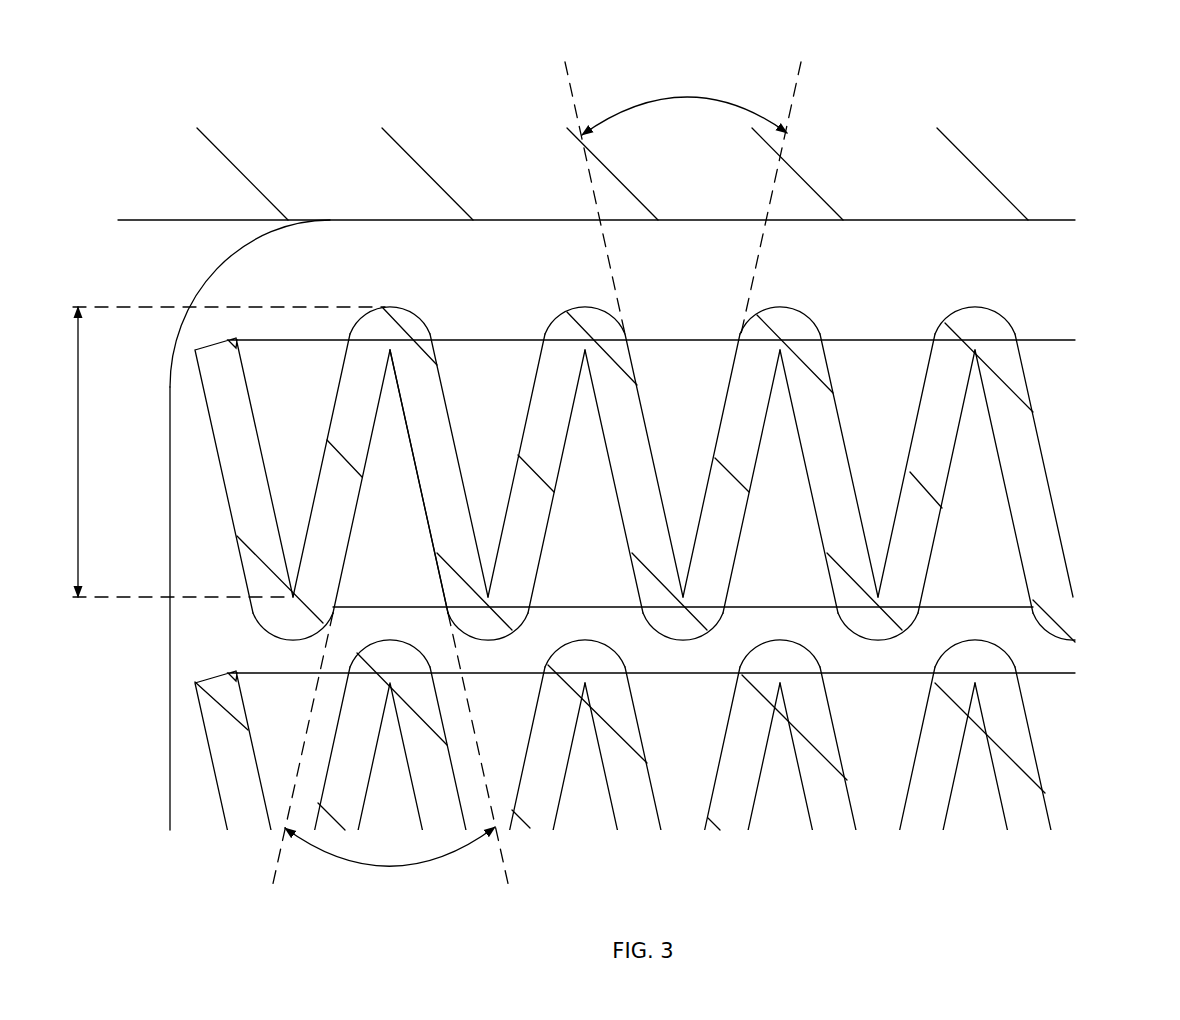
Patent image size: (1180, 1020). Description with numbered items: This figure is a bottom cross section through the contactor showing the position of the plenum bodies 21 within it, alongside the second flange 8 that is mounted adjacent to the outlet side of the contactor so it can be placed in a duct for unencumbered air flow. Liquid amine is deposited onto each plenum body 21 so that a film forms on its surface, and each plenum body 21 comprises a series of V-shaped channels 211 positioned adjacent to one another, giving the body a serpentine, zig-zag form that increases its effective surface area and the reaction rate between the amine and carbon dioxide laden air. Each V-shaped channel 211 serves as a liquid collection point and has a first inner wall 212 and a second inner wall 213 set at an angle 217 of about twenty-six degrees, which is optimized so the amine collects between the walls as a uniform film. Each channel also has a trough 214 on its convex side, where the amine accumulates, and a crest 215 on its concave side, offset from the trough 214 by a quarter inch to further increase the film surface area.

The second flange 8 is at (207, 221).
The plenum body 21 is at (232, 498).
The V-shaped channel 211 is at (293, 392).
The first inner wall 212 is at (352, 508).
The second inner wall 213 is at (427, 475).
The trough 214 is at (386, 306).
The crest 215 is at (290, 600).
The angle 217 is at (693, 96).